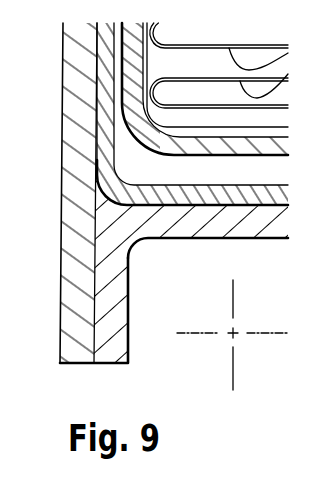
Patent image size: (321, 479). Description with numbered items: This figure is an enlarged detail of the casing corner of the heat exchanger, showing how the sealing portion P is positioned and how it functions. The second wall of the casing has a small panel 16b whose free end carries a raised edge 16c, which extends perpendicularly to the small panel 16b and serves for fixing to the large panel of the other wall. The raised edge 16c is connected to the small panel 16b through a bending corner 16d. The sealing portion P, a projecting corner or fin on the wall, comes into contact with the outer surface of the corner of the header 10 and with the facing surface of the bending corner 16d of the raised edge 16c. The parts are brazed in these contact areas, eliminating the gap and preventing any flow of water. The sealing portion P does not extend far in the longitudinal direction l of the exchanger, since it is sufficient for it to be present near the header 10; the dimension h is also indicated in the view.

The header 10 is at (122, 73).
The sealing portion p is at (98, 229).
The small panel 16b is at (243, 228).
The raised edge 16c is at (118, 347).
The bending corner 16d is at (128, 238).
The longitudinal direction l is at (277, 332).
The height h is at (235, 378).